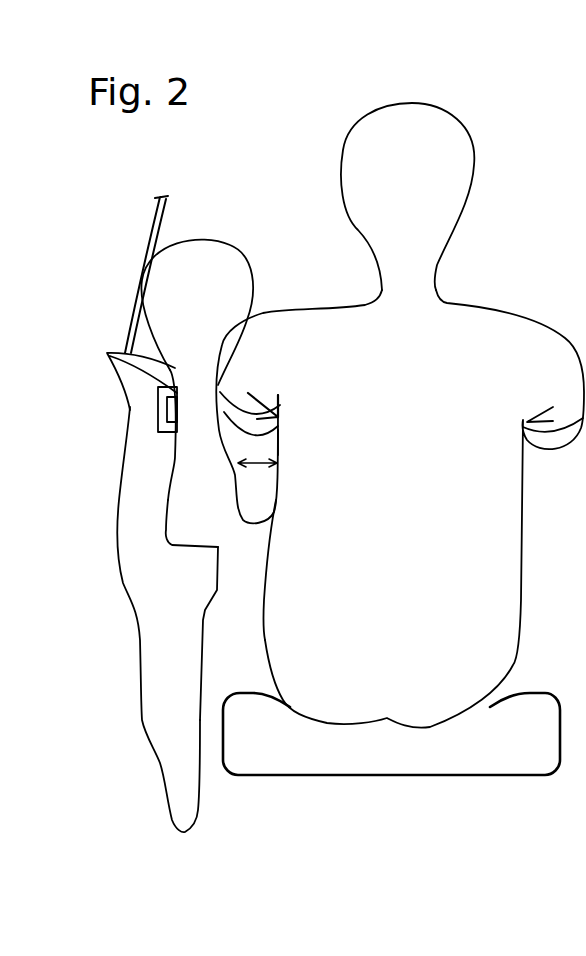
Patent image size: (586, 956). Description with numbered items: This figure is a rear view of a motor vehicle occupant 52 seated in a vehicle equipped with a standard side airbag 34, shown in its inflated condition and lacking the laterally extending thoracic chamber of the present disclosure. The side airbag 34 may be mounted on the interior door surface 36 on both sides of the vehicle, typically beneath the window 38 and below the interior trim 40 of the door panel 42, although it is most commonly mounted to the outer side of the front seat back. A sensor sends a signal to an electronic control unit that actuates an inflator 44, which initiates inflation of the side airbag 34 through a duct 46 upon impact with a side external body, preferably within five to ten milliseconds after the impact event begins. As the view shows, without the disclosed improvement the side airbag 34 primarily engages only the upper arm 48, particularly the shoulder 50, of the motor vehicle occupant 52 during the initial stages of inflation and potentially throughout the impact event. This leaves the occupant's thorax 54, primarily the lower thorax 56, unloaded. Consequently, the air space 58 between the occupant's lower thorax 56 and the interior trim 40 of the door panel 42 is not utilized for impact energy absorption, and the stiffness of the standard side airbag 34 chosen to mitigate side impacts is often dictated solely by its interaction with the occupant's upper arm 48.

The side airbag 34 is at (180, 493).
The interior door surface 36 is at (207, 627).
The window 38 is at (155, 233).
The interior trim 40 is at (160, 363).
The door panel 42 is at (165, 521).
The inflator 44 is at (160, 427).
The duct 46 is at (160, 408).
The upper arm 48 is at (278, 417).
The shoulder 50 is at (255, 337).
The motor vehicle occupant 52 is at (343, 678).
The thorax 54 is at (278, 442).
The lower thorax 56 is at (270, 538).
The air space 58 is at (253, 468).